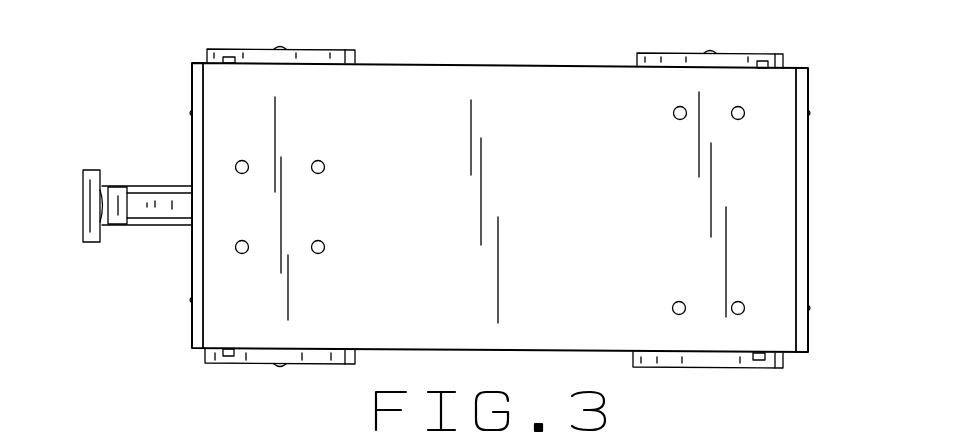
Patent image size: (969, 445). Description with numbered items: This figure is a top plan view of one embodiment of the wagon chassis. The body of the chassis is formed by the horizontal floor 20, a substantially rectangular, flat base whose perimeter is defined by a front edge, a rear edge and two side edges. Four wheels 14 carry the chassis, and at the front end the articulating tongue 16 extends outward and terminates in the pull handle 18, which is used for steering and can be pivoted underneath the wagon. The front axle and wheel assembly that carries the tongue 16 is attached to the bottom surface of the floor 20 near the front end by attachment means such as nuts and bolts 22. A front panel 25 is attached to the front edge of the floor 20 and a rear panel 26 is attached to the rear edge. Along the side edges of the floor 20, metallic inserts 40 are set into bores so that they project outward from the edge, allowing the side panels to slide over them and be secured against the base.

The wheels 14 is at (358, 46).
The articulating tongue 16 is at (117, 184).
The pull handle 18 is at (83, 208).
The floor 20 is at (508, 115).
The nuts and bolts 22 is at (322, 163).
The front panel 25 is at (191, 273).
The rear panel 26 is at (803, 212).
The metallic inserts 40 is at (228, 57).